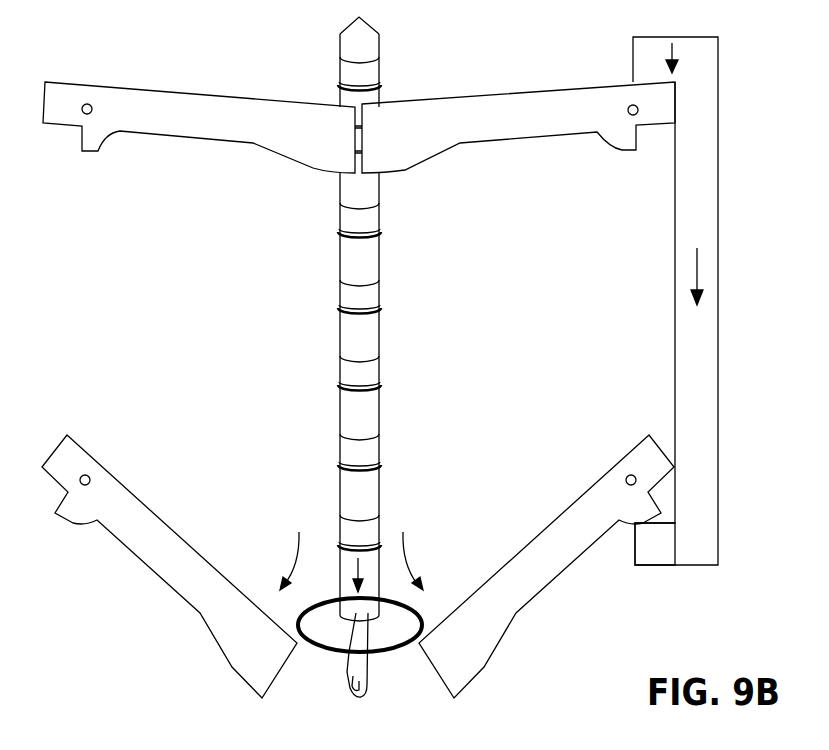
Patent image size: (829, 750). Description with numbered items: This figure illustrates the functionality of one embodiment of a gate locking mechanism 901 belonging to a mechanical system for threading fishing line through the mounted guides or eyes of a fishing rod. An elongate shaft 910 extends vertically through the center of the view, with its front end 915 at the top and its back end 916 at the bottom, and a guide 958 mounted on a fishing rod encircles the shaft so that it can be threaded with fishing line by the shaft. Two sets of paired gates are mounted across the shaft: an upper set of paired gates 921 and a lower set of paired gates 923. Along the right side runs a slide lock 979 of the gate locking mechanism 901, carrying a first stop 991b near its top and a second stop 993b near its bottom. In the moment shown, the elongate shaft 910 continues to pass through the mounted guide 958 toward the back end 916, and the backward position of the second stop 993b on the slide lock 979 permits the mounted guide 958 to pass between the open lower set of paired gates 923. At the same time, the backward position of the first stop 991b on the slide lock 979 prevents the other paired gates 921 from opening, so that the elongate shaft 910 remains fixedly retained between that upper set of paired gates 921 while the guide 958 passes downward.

The gate locking mechanism 901 is at (769, 530).
The elongate shaft 910 is at (345, 331).
The front end 915 is at (340, 34).
The back end 916 is at (355, 655).
The paired gates 921 is at (272, 136).
The paired gates 923 is at (272, 646).
The guide 958 is at (428, 610).
The slide lock 979 is at (677, 165).
The first stop 991b is at (625, 82).
The second stop 993b is at (633, 522).